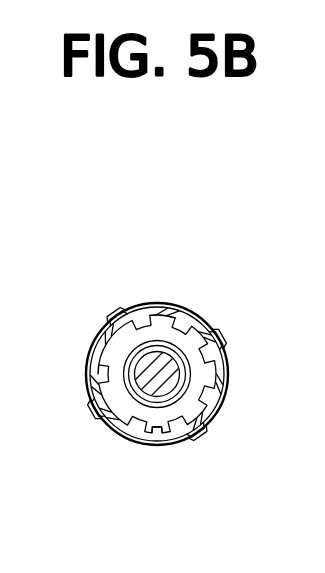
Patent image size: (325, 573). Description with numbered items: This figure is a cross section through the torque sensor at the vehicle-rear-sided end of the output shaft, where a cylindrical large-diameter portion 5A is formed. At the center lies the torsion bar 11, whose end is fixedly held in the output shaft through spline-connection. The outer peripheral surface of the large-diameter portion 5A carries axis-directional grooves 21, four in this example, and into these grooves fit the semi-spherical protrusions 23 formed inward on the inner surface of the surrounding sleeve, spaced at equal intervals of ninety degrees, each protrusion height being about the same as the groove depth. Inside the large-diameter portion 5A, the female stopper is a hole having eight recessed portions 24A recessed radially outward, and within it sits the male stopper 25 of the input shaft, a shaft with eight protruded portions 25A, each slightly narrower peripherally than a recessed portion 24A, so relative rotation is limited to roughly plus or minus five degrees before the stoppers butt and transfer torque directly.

The large-diameter portion 5A is at (181, 312).
The torsion bar 11 is at (142, 367).
The axis-directional groove 21 is at (127, 315).
The semi-spherical protrusion 23 is at (220, 345).
The recessed portion 24A is at (164, 443).
The male stopper 25 is at (183, 345).
The protruded portion 25A is at (218, 405).